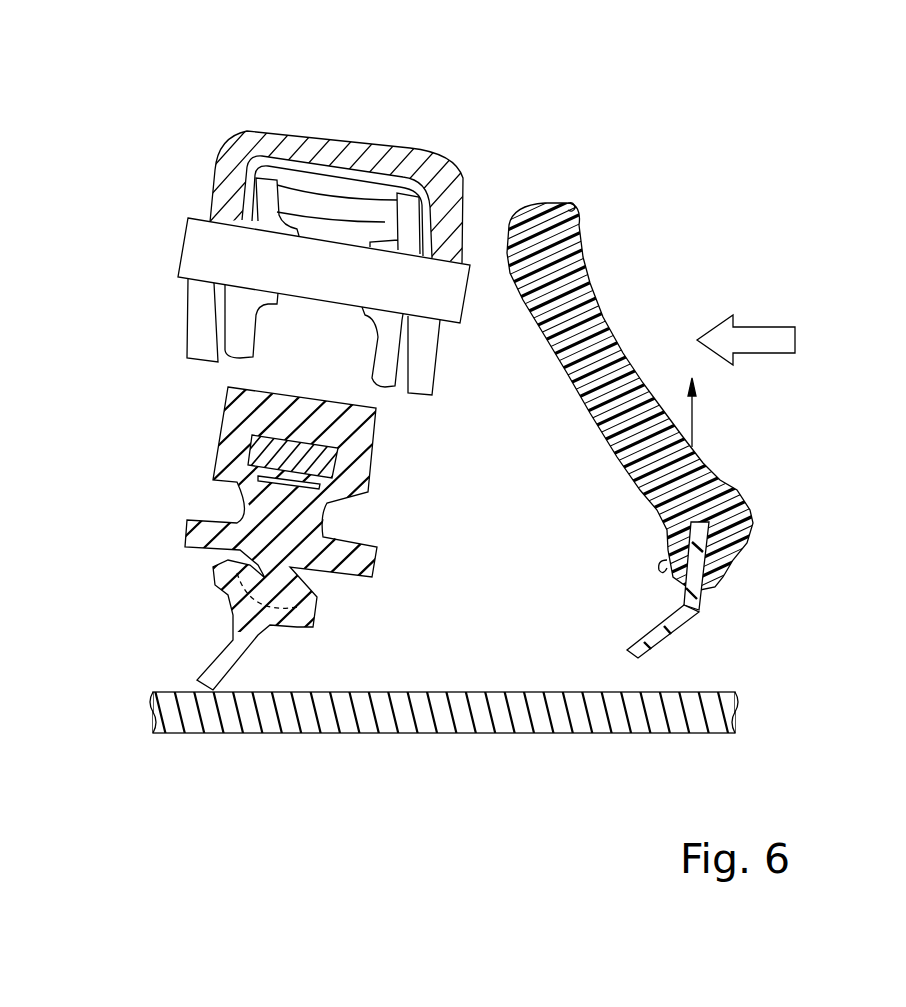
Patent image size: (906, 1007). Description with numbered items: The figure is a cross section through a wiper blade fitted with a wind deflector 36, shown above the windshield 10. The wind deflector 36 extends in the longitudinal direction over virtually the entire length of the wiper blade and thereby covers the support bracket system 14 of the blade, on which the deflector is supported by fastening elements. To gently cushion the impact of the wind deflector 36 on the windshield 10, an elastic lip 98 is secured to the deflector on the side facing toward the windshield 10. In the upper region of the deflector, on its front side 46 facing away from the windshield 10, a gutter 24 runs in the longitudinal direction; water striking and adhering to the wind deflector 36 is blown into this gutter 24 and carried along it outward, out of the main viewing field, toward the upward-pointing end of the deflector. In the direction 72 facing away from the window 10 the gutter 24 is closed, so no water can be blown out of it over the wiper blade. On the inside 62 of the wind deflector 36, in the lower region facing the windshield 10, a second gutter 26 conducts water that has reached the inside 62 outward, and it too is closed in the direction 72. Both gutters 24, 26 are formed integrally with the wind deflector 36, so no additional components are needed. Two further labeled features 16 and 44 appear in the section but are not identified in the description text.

The windshield 10 is at (186, 715).
The support bracket system 14 is at (217, 123).
The pin fastener part 16 is at (172, 507).
The gutter 24 is at (576, 207).
The second gutter 26 is at (658, 563).
The wind deflector 36 is at (630, 302).
The force direction arrow 44 is at (760, 337).
The front side 46 is at (630, 366).
The inside 62 is at (588, 411).
The direction facing away from the window 72 is at (693, 423).
The elastic lip 98 is at (680, 620).